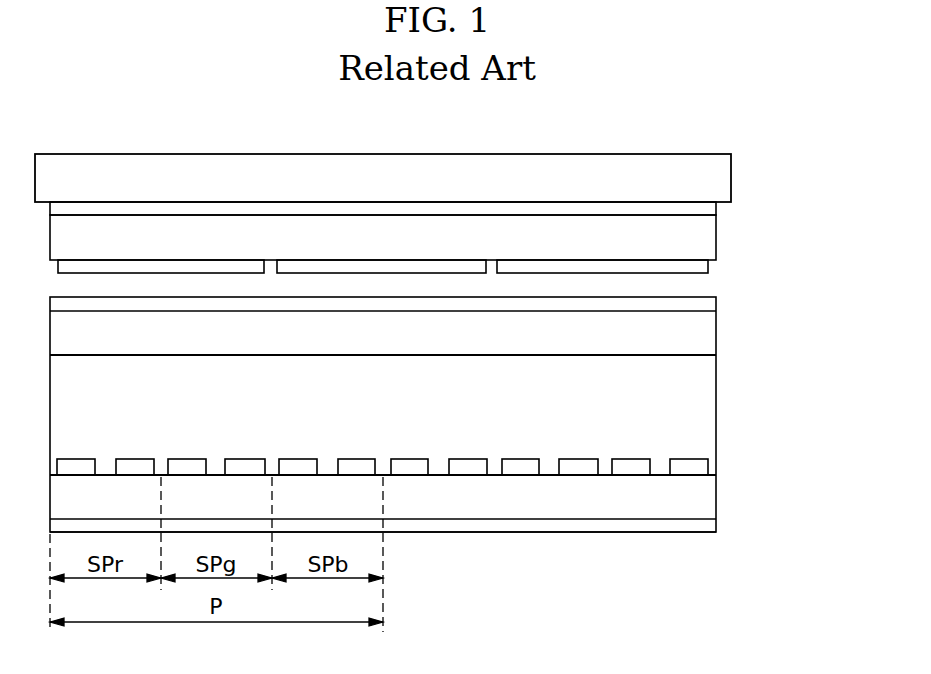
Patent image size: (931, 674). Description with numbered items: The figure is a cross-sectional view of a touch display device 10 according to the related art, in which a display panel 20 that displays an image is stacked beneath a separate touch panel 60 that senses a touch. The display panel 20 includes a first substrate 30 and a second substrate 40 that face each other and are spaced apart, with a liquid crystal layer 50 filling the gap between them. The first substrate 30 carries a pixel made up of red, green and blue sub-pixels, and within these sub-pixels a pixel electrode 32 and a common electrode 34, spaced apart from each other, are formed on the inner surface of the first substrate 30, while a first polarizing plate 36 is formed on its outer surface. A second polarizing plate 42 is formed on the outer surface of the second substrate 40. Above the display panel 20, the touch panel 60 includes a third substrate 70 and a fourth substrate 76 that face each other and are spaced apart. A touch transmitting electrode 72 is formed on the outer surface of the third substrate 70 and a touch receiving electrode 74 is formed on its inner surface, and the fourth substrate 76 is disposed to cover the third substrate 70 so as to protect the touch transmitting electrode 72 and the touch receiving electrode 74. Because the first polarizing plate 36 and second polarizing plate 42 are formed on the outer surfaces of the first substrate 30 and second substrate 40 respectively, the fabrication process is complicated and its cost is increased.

The touch display device 10 is at (418, 133).
The display panel 20 is at (458, 453).
The first substrate 30 is at (718, 497).
The pixel electrode 32 is at (407, 476).
The common electrode 34 is at (472, 476).
The first polarizing plate 36 is at (718, 525).
The second substrate 40 is at (718, 330).
The second polarizing plate 42 is at (718, 303).
The liquid crystal layer 50 is at (718, 410).
The touch panel 60 is at (449, 217).
The third substrate 70 is at (718, 238).
The touch transmitting electrode 72 is at (435, 268).
The touch receiving electrode 74 is at (718, 209).
The fourth substrate 76 is at (733, 176).